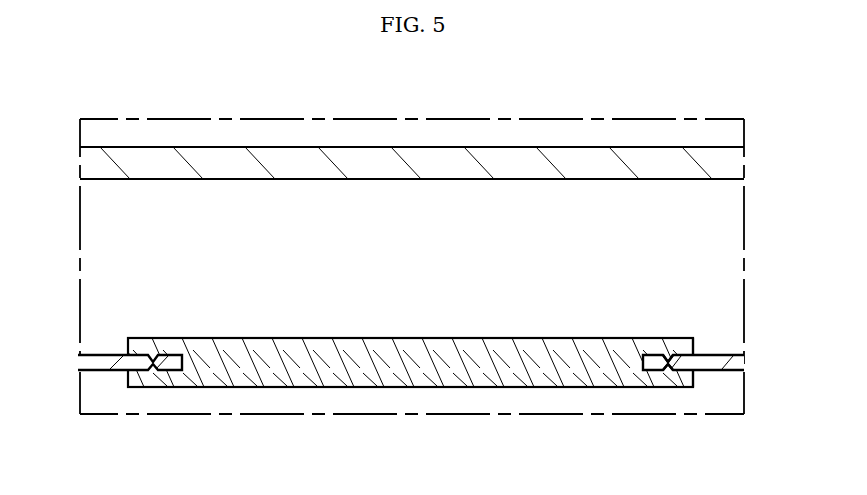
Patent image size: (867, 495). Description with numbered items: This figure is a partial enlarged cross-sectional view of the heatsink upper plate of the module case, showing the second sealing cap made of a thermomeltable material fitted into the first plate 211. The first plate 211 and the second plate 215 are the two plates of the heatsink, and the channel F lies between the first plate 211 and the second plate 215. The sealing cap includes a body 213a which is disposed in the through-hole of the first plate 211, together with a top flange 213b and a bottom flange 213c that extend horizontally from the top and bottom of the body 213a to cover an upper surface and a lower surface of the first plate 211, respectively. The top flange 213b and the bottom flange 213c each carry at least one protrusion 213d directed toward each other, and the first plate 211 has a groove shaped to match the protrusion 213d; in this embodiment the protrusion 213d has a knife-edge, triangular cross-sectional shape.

The channel F is at (141, 245).
The second plate 215 is at (293, 158).
The first plate 211 is at (90, 363).
The body 213a is at (382, 377).
The top flange 213b is at (682, 348).
The bottom flange 213c is at (680, 380).
The protrusion 213d is at (669, 369).